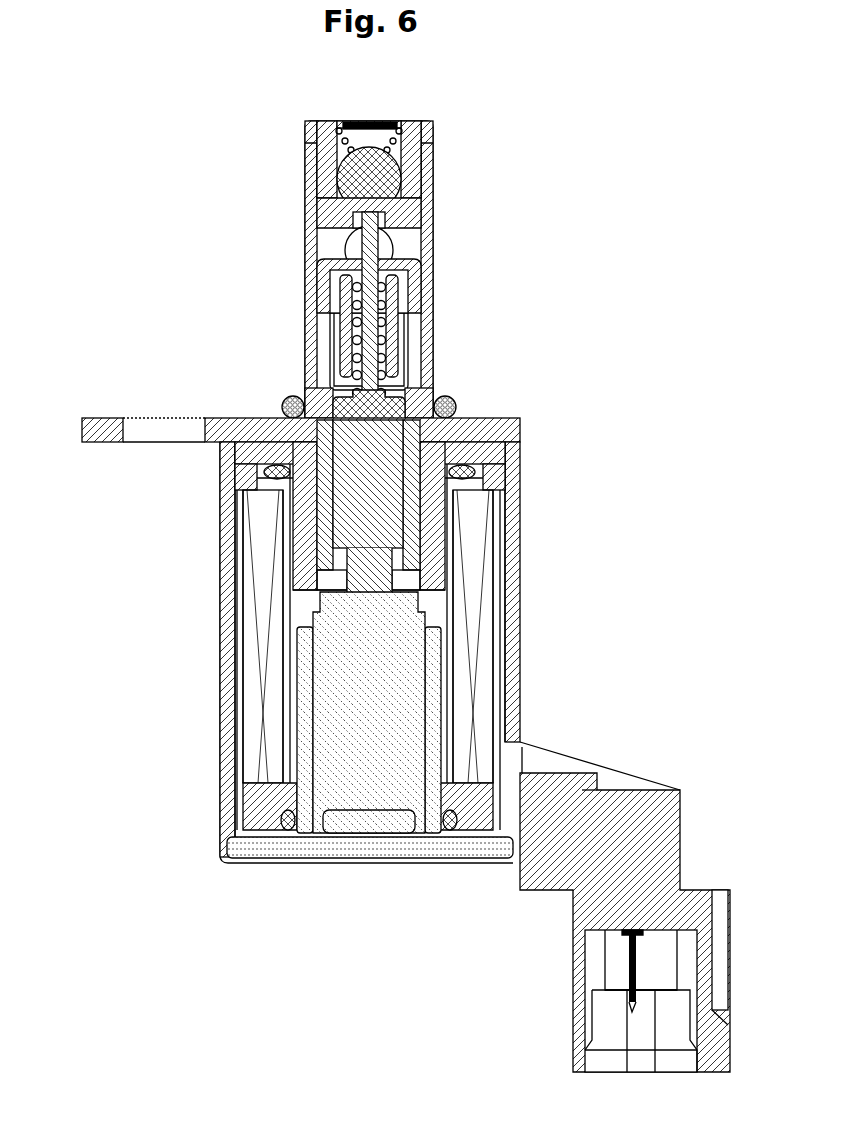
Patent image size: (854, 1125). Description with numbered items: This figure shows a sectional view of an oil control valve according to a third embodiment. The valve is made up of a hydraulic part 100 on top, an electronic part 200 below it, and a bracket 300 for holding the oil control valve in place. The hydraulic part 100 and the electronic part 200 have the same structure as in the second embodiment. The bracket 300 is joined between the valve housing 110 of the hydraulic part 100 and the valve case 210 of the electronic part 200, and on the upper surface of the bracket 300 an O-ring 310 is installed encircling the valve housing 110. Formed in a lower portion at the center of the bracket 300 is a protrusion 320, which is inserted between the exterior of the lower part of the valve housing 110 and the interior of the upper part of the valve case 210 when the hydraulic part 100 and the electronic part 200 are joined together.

The hydraulic part 100 is at (448, 110).
The valve housing 110 is at (312, 296).
The O-ring seal 310 is at (447, 396).
The bracket 300 is at (79, 415).
The electronic part 200 is at (166, 617).
The valve case 210 is at (226, 540).
The protrusion 320 is at (432, 514).